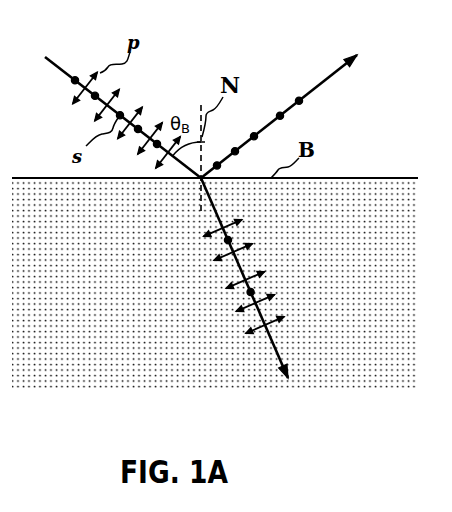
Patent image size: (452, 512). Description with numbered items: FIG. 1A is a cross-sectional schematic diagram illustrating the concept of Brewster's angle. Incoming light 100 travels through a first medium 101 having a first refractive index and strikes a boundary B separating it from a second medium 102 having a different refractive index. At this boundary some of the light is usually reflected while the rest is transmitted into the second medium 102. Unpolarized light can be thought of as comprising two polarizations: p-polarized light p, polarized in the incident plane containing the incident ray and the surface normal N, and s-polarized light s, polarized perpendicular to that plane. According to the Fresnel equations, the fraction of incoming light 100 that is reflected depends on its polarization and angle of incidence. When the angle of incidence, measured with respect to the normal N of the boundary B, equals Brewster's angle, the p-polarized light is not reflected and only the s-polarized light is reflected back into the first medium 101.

The incoming light 100 is at (60, 66).
The first medium 101 is at (367, 147).
The second medium 102 is at (367, 250).